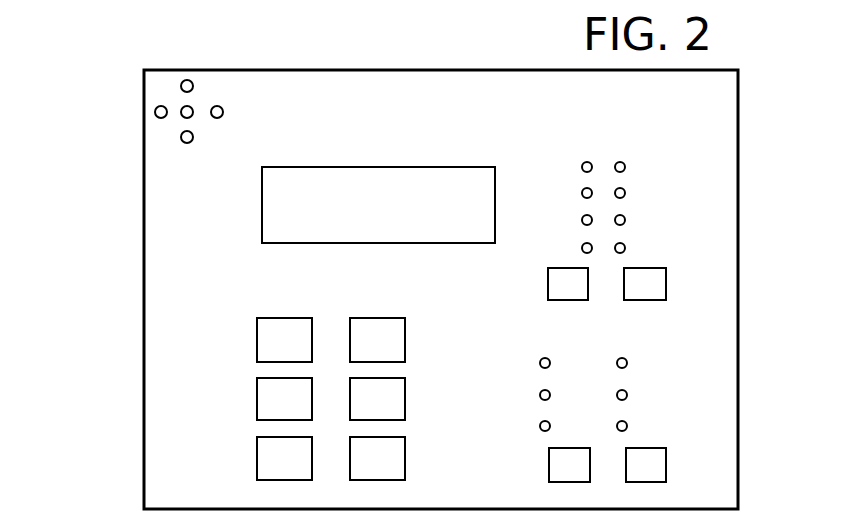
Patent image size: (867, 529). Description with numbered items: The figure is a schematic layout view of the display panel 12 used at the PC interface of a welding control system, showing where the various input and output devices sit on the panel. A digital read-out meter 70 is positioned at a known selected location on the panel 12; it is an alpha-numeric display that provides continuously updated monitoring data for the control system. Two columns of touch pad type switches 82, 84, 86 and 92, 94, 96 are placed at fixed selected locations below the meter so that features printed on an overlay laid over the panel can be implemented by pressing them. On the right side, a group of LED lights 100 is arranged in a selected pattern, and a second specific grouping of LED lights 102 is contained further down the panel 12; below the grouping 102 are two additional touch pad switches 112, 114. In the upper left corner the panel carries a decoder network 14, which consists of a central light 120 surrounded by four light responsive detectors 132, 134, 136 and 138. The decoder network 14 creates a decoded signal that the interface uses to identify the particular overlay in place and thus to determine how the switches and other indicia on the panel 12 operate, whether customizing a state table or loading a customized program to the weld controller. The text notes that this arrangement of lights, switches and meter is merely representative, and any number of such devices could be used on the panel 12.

The display panel 12 is at (749, 149).
The decoder network 14 is at (215, 75).
The light responsive detector 132 is at (190, 79).
The light responsive detector 134 is at (158, 111).
The central light 120 is at (184, 115).
The light responsive detector 138 is at (223, 113).
The light responsive detector 136 is at (187, 144).
The digital read-out meter 70 is at (421, 167).
The touch pad type switch 82 is at (257, 342).
The touch pad type switch 84 is at (257, 406).
The touch pad type switch 86 is at (257, 457).
The touch pad type switch 92 is at (405, 337).
The touch pad type switch 94 is at (405, 398).
The touch pad type switch 96 is at (405, 463).
The group of LED lights 100 is at (636, 153).
The touch pad switch 112 is at (655, 268).
The grouping of LED lights 102 is at (641, 354).
The touch pad switch 114 is at (650, 448).